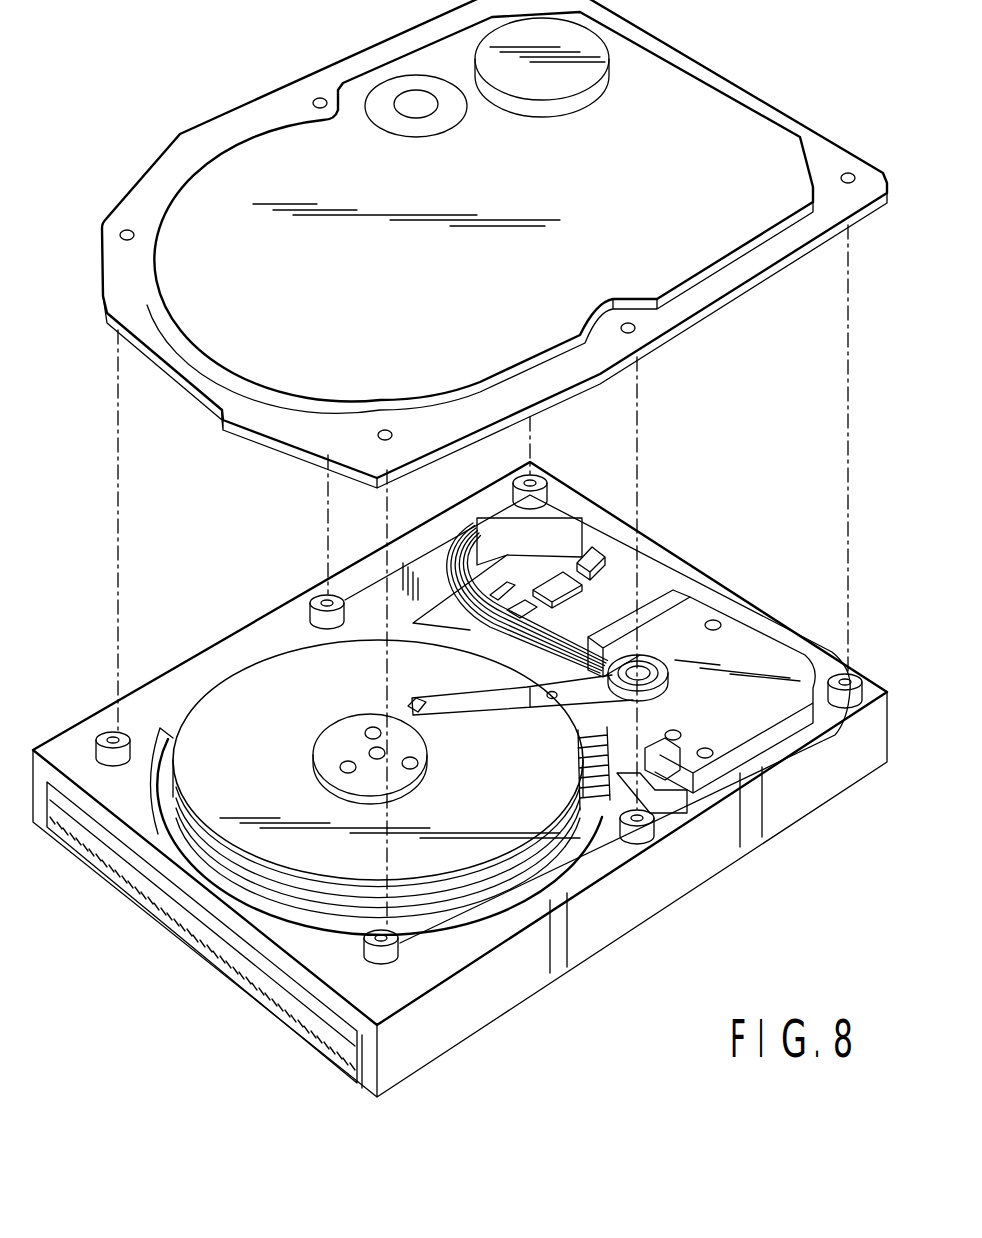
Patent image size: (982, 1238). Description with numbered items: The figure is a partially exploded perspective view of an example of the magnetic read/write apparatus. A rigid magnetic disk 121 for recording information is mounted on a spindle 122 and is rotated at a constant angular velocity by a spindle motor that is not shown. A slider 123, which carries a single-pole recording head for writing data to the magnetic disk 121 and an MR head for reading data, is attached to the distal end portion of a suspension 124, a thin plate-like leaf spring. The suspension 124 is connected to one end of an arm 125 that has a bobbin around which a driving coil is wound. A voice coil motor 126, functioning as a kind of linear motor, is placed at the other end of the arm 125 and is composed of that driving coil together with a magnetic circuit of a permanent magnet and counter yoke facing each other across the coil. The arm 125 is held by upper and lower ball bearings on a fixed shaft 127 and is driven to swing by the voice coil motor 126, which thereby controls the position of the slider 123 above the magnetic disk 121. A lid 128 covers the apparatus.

The rigid magnetic disk 121 is at (220, 720).
The spindle 122 is at (327, 757).
The slider 123 is at (408, 707).
The suspension 124 is at (480, 713).
The arm 125 is at (555, 713).
The voice coil motor 126 is at (755, 653).
The fixed shaft 127 is at (660, 677).
The lid 128 is at (733, 127).